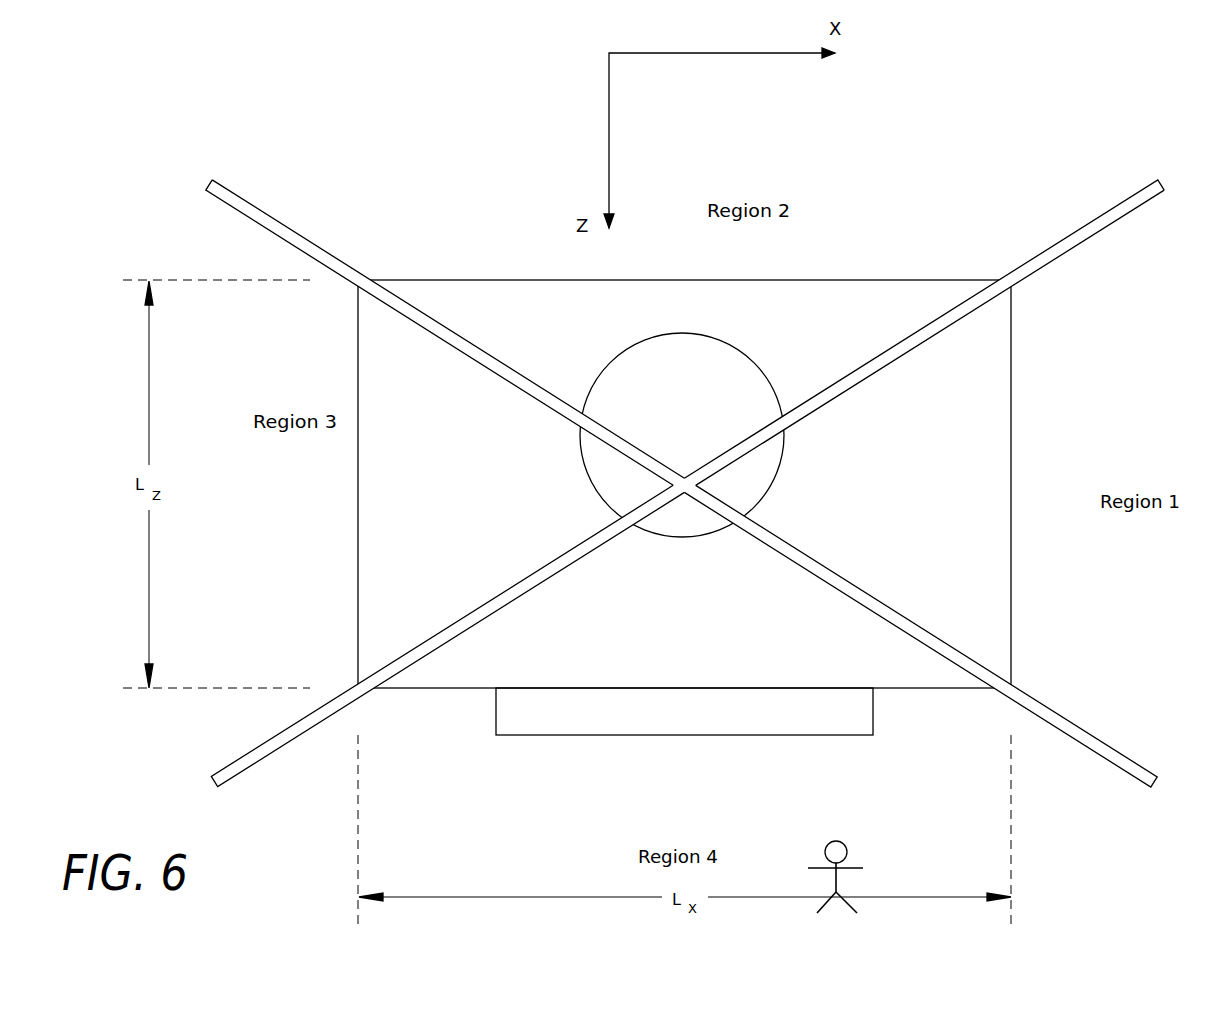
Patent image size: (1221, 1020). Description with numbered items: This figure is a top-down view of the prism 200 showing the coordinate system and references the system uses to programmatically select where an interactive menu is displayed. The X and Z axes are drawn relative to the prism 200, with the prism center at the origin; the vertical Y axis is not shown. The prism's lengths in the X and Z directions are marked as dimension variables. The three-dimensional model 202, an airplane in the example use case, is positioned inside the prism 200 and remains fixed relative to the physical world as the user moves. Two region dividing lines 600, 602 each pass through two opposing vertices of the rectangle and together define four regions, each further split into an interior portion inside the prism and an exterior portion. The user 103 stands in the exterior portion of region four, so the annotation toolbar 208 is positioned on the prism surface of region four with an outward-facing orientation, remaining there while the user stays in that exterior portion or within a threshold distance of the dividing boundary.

The user 103 is at (855, 863).
The prism 200 is at (895, 280).
The 3D model 202 is at (746, 353).
The annotation toolbar 208 is at (795, 735).
The region dividing line 600 is at (255, 205).
The region dividing line 602 is at (1107, 208).